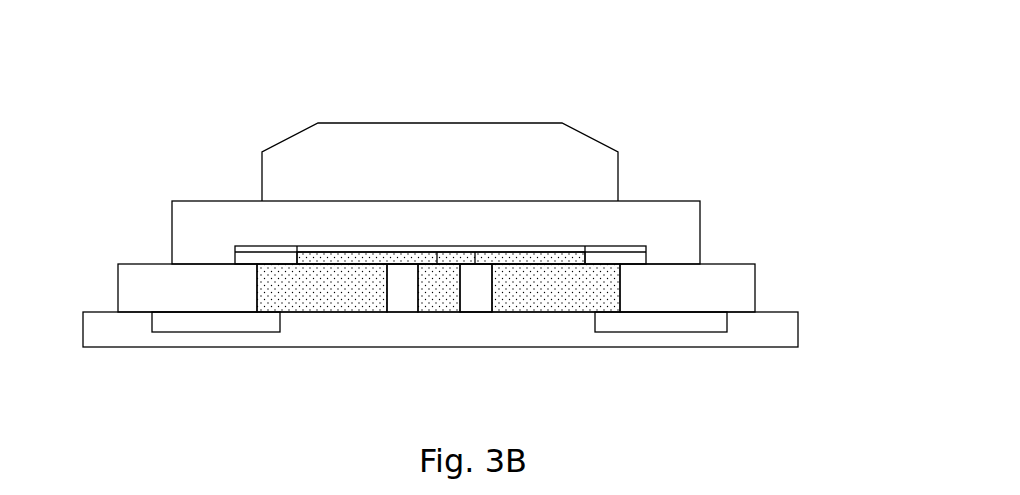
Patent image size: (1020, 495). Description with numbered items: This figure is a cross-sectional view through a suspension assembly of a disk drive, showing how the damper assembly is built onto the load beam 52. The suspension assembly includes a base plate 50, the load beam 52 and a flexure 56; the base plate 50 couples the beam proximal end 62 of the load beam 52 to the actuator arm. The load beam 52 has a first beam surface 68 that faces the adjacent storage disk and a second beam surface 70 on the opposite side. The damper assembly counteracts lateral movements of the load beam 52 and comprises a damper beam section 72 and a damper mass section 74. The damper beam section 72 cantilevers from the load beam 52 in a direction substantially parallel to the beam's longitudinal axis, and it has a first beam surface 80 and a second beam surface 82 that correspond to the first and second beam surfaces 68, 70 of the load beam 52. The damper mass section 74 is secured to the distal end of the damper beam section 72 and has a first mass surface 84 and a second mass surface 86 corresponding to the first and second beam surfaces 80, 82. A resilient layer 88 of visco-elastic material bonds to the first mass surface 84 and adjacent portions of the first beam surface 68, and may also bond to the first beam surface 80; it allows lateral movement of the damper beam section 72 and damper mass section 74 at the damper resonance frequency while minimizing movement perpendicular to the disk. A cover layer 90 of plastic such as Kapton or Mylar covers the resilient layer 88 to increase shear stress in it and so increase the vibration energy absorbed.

The base plate 50 is at (448, 148).
The load beam 52 is at (340, 295).
The flexure 56 is at (225, 318).
The beam proximal end 62 is at (142, 292).
The first beam surface 68 is at (158, 262).
The second beam surface 70 is at (140, 315).
The damper beam section 72 is at (452, 293).
The damper mass section 74 is at (400, 298).
The first beam surface 80 is at (437, 262).
The second beam surface 82 is at (438, 313).
The first mass surface 84 is at (475, 262).
The second mass surface 86 is at (483, 311).
The resilient layer 88 is at (565, 257).
The cover layer 90 is at (517, 250).